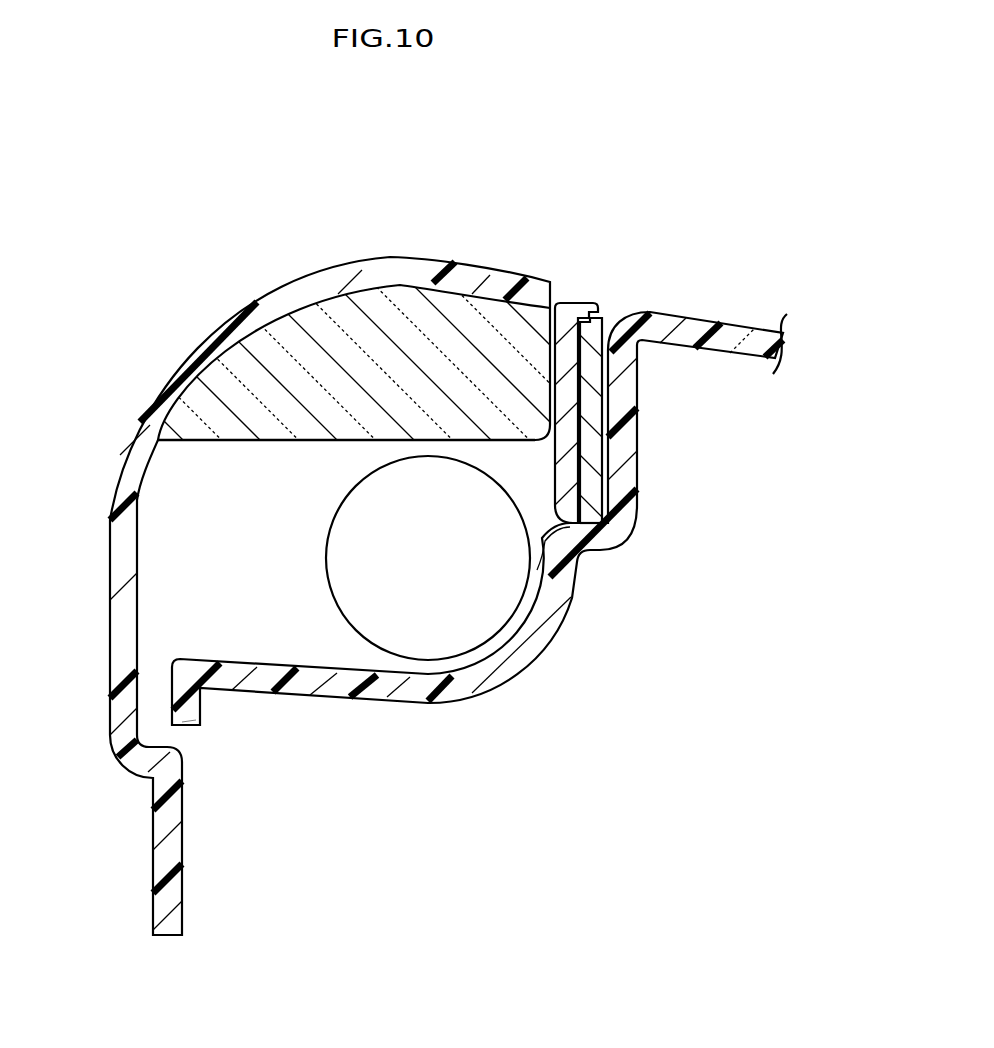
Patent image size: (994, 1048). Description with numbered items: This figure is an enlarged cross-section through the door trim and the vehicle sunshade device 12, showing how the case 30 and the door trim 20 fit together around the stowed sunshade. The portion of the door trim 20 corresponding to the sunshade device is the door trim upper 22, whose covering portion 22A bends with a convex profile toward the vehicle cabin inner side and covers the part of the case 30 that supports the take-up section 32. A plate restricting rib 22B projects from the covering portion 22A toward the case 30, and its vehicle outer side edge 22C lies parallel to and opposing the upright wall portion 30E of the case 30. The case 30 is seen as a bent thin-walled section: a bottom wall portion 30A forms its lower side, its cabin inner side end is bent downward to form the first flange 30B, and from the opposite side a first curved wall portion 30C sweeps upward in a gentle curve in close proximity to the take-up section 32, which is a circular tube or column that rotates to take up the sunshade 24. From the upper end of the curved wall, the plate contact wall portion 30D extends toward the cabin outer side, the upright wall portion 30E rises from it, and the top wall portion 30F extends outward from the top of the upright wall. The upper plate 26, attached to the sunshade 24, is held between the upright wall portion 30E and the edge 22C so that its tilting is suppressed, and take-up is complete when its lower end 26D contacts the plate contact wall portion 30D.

The vehicle sunshade device 12 is at (641, 706).
The door trim 20 is at (330, 596).
The door trim upper 22 is at (213, 326).
The covering portion 22A is at (172, 365).
The plate restricting rib 22B is at (410, 325).
The vehicle outer side edge 22C is at (575, 372).
The sunshade 24 is at (572, 570).
The upper plate 26 is at (606, 389).
The lower end 26D is at (585, 560).
The case 30 is at (320, 702).
The bottom wall portion 30A is at (247, 700).
The first flange 30B is at (200, 716).
The first curved wall portion 30C is at (520, 670).
The plate contact wall portion 30D is at (582, 551).
The upright wall portion 30E is at (637, 445).
The top wall portion 30F is at (741, 320).
The take-up section 32 is at (326, 578).